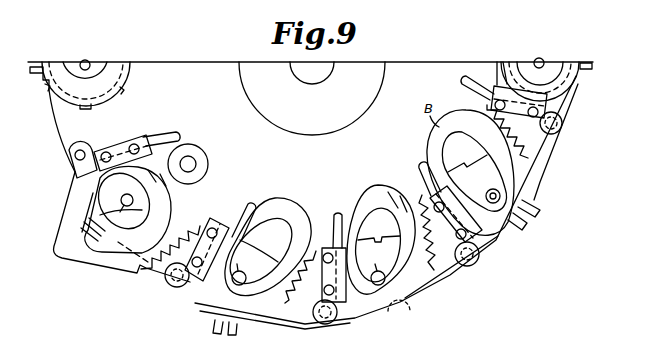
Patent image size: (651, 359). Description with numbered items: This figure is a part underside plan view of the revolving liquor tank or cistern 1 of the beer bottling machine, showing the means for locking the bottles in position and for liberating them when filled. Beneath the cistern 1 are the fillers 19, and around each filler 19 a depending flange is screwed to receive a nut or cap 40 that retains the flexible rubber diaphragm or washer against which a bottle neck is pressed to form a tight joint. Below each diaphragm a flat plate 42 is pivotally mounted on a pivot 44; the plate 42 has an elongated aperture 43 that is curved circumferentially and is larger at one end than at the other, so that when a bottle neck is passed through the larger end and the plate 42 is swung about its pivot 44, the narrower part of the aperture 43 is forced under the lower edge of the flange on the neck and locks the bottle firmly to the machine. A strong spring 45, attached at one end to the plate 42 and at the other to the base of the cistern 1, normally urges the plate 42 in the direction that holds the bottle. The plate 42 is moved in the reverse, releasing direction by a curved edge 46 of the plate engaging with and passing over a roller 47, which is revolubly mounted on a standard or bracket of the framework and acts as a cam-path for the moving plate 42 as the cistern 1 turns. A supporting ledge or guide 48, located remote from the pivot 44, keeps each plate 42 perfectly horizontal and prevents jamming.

The liquor tank or cistern 1 is at (228, 62).
The filler 19 is at (85, 68).
The nut or cap 40 is at (55, 97).
The flat plate 42 is at (100, 262).
The elongated aperture 43 is at (142, 177).
The pivot 44 is at (175, 283).
The spring 45 is at (209, 224).
The curved edge 46 is at (172, 199).
The roller 47 is at (204, 150).
The supporting ledge or guide 48 is at (120, 146).